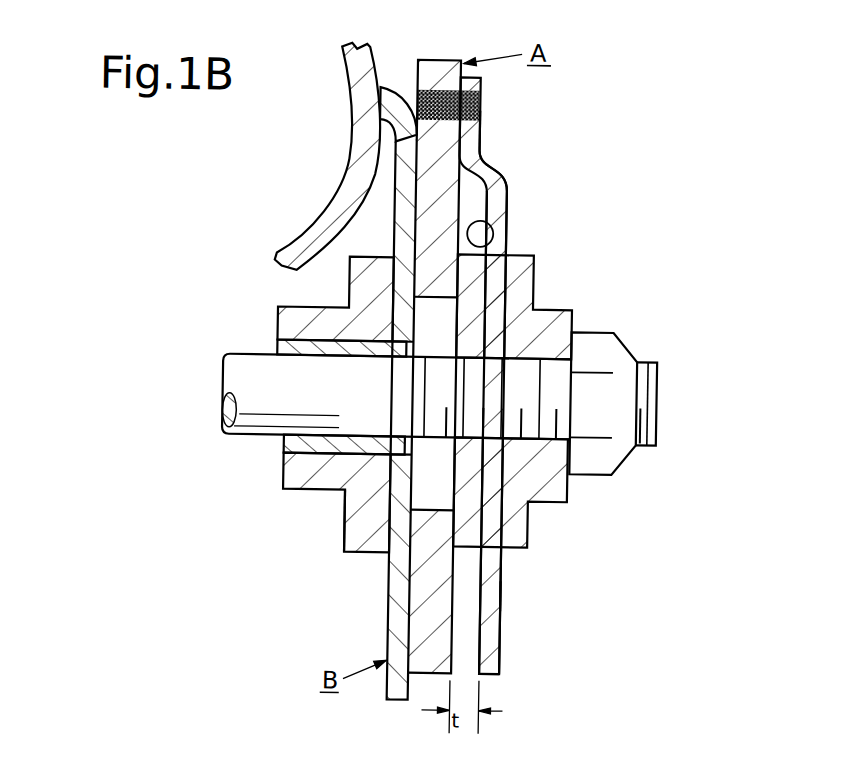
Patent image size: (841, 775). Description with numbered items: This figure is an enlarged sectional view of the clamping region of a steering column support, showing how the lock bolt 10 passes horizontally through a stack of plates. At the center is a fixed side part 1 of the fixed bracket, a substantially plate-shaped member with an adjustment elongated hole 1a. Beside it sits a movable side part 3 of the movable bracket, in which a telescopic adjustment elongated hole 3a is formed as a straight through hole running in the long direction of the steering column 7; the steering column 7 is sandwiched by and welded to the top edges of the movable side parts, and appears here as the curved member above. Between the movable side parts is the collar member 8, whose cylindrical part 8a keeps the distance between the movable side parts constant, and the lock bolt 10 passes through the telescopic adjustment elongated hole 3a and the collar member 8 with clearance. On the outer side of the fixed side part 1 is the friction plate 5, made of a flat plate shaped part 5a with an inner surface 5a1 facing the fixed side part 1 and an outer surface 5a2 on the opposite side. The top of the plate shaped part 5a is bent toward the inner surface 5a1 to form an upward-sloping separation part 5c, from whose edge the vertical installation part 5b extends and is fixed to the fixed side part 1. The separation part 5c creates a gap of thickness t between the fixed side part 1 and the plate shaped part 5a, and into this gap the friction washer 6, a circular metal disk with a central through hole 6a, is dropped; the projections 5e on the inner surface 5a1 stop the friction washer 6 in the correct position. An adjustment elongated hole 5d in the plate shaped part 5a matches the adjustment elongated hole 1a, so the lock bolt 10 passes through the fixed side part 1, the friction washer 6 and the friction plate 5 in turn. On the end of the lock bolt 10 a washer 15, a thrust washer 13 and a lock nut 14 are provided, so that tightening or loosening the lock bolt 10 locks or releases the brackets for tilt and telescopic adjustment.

The fixed side part 1 is at (412, 82).
The adjustment elongated hole 1a is at (433, 327).
The movable side part 3 is at (388, 578).
The telescopic adjustment elongated hole 3a is at (407, 438).
The friction plate 5 is at (504, 197).
The plate shaped part 5a is at (504, 572).
The inner surface 5a1 is at (484, 643).
The outer surface 5a2 is at (504, 590).
The installation part 5b is at (478, 132).
The separation part 5c is at (491, 166).
The adjustment elongated hole 5d is at (493, 488).
The projection 5e is at (491, 233).
The friction washer 6 is at (463, 553).
The through hole 6a is at (472, 357).
The steering column 7 is at (334, 192).
The collar member 8 is at (346, 519).
The cylindrical part 8a is at (325, 497).
The lock bolt 10 is at (261, 438).
The thrust washer 13 is at (572, 312).
The lock nut 14 is at (632, 462).
The washer 15 is at (535, 272).